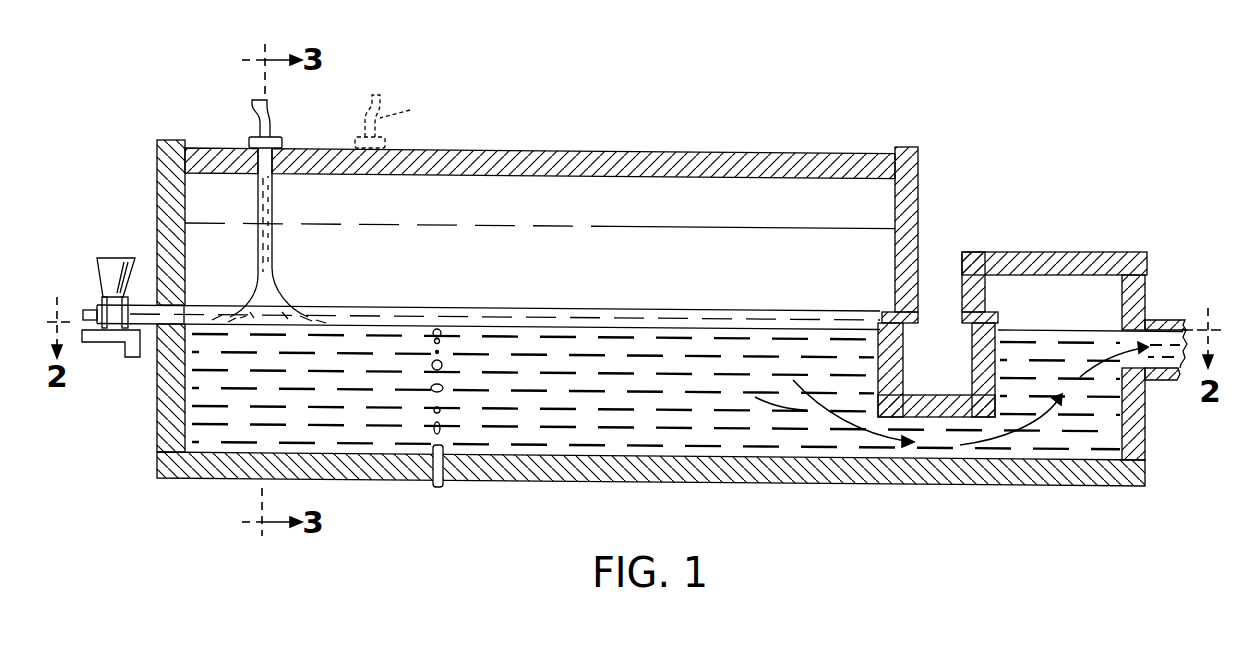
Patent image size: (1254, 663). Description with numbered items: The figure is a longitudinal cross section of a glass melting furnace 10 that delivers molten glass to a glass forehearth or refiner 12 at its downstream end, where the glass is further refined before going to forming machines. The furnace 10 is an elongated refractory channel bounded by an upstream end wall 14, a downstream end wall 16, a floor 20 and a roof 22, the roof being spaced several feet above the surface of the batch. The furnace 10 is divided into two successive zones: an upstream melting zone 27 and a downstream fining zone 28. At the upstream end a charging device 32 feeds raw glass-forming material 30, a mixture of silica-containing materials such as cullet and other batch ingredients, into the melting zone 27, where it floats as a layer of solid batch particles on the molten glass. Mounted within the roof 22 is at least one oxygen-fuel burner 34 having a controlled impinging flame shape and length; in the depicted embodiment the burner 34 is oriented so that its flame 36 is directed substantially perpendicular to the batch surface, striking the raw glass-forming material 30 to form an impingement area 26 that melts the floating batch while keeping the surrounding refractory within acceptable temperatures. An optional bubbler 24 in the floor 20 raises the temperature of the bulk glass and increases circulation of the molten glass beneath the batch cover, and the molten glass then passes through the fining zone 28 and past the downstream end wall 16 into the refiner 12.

The glass melting furnace 10 is at (649, 312).
The glass forehearth or refiner 12 is at (1072, 252).
The upstream end wall 14 is at (158, 228).
The downstream end wall 16 is at (919, 207).
The floor 20 is at (650, 484).
The roof 22 is at (548, 152).
The bubbler 24 is at (445, 487).
The impingement area 26 is at (293, 312).
The melting zone 27 is at (377, 221).
The fining zone 28 is at (825, 277).
The raw glass-forming material 30 is at (200, 307).
The charging device 32 is at (112, 344).
The oxygen-fuel burner 34 is at (272, 118).
The flame 36 is at (273, 211).